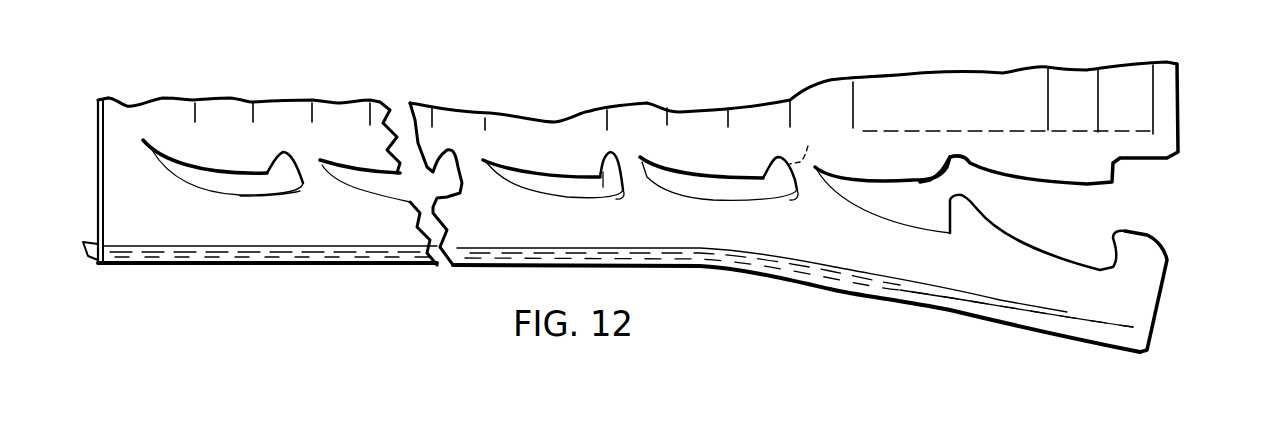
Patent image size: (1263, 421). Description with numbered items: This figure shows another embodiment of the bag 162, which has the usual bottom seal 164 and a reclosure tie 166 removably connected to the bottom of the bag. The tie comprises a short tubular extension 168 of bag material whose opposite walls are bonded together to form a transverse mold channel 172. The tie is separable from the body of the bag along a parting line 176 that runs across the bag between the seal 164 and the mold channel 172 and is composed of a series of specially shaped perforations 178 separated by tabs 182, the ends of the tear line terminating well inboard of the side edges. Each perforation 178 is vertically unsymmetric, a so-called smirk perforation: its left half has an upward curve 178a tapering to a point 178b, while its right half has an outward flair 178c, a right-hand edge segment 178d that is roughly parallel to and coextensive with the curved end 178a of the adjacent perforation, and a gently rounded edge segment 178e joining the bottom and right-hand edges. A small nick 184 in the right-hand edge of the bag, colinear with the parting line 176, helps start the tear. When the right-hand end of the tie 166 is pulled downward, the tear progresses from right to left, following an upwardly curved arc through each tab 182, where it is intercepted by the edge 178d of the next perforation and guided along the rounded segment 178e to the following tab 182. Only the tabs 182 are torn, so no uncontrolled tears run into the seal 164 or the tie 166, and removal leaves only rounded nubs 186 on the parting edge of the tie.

The bag 162 is at (184, 91).
The bottom seal 164 is at (1047, 90).
The reclosure tie 166 is at (87, 150).
The tubular extension 168 is at (84, 258).
The mold channel 172 is at (203, 251).
The parting line 176 is at (274, 219).
The perforation 178 is at (370, 186).
The upward curve 178a is at (181, 170).
The point 178b is at (170, 177).
The outward flair 178c is at (603, 186).
The right-hand edge segment 178d is at (598, 172).
The rounded edge segment 178e is at (693, 188).
The tab 182 is at (314, 172).
The nick 184 is at (1172, 160).
The rounded nub 186 is at (968, 213).